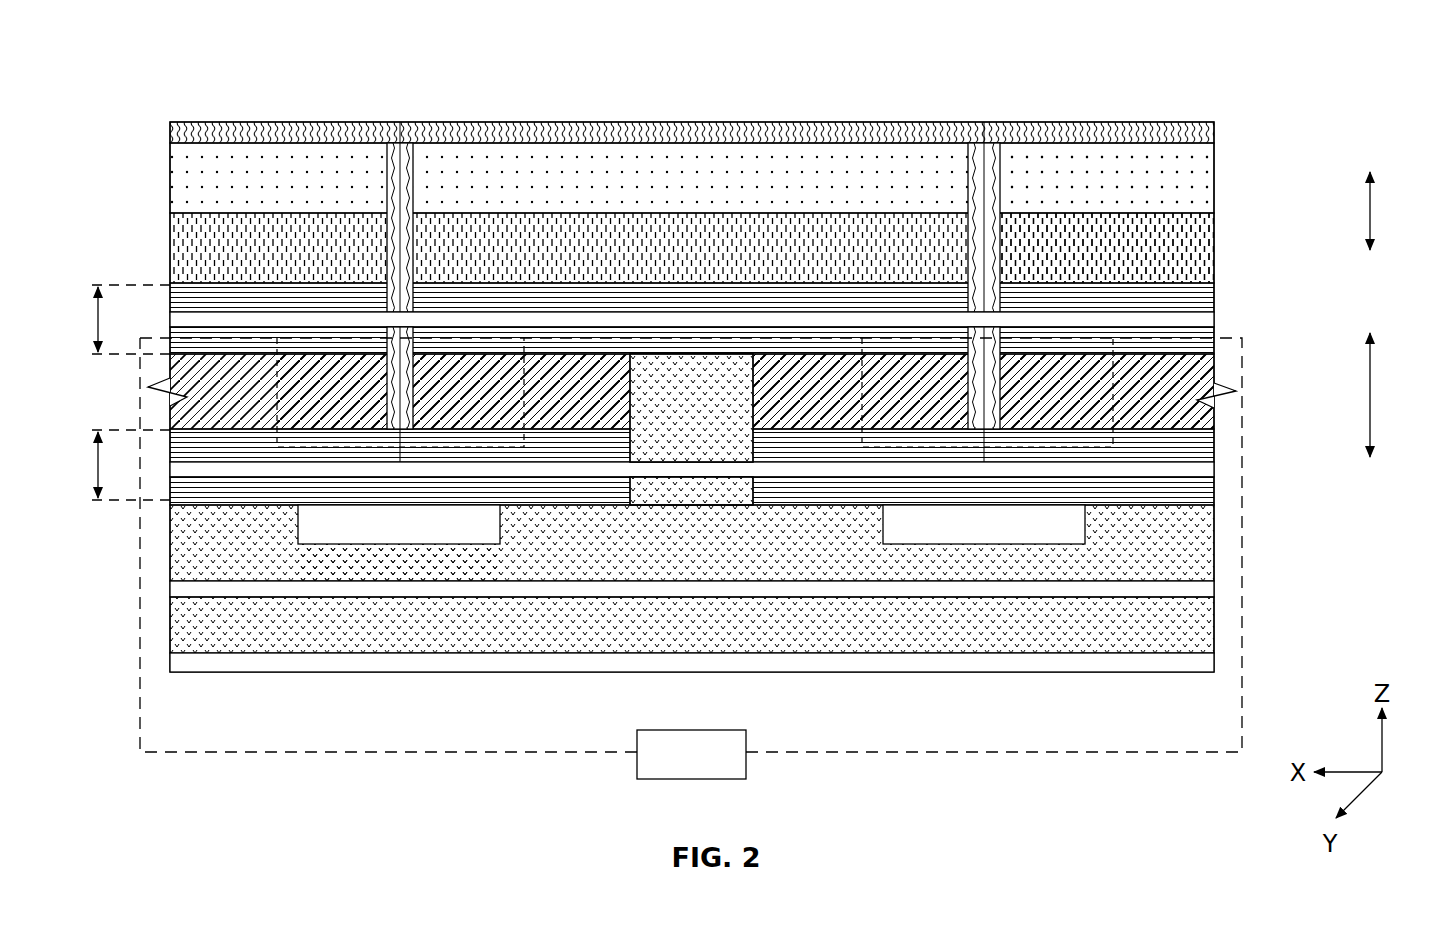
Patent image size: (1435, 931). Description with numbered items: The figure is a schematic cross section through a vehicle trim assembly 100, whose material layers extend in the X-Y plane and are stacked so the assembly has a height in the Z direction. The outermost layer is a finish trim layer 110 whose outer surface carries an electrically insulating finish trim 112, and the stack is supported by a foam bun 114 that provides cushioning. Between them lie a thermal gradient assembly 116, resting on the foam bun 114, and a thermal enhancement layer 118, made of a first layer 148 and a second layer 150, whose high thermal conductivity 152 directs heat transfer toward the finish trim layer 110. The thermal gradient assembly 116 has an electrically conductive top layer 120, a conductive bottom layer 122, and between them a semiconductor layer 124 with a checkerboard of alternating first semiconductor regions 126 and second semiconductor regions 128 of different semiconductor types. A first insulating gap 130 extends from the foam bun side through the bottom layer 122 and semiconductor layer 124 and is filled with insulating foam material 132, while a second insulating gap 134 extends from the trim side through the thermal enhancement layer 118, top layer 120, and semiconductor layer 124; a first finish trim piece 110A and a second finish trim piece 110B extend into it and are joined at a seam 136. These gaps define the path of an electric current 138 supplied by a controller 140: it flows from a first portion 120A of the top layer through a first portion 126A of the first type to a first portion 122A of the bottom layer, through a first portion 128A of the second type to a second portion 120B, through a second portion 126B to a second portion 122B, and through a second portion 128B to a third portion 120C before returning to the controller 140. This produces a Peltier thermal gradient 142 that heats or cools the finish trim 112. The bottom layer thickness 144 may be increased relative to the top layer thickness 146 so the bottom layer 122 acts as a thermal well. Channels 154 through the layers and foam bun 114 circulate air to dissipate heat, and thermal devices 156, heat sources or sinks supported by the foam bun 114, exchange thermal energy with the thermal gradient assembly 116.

The vehicle trim assembly 100 is at (150, 100).
The finish trim layer 110 is at (767, 103).
The first finish trim piece 110A is at (258, 127).
The second finish trim piece 110B is at (490, 127).
The finish trim 112 is at (1214, 122).
The foam bun 114 is at (767, 587).
The thermal gradient assembly 116 is at (756, 436).
The thermal enhancement layer 118 is at (767, 177).
The top layer 120 is at (736, 190).
The first portion of the top layer 120A is at (1087, 300).
The second portion of the top layer 120B is at (703, 298).
The third portion of the top layer 120C is at (323, 300).
The bottom layer 122 is at (736, 549).
The first portion of the bottom layer 122A is at (1113, 490).
The second portion of the bottom layer 122B is at (552, 488).
The semiconductor layer 124 is at (725, 390).
The first semiconductor regions 126 is at (514, 364).
The first portion of the first semiconductor type 126A is at (1202, 415).
The second portion of the first semiconductor type 126B is at (497, 372).
The second semiconductor regions 128 is at (794, 369).
The first portion of the second semiconductor type 128A is at (863, 375).
The second portion of the second semiconductor type 128B is at (270, 372).
The first insulating gap 130 is at (736, 343).
The insulating foam material 132 is at (705, 370).
The second insulating gap 134 is at (383, 167).
The seam 136 is at (399, 432).
The electric current 138 is at (1185, 752).
The controller 140 is at (712, 779).
The thermal gradient 142 is at (1372, 398).
The bottom layer thickness 144 is at (95, 466).
The top layer thickness 146 is at (95, 320).
The first layer 148 is at (1043, 150).
The second layer 150 is at (1163, 243).
The thermal conductivity 152 is at (1372, 212).
The channels 154 is at (186, 323).
The thermal devices 156 is at (422, 532).